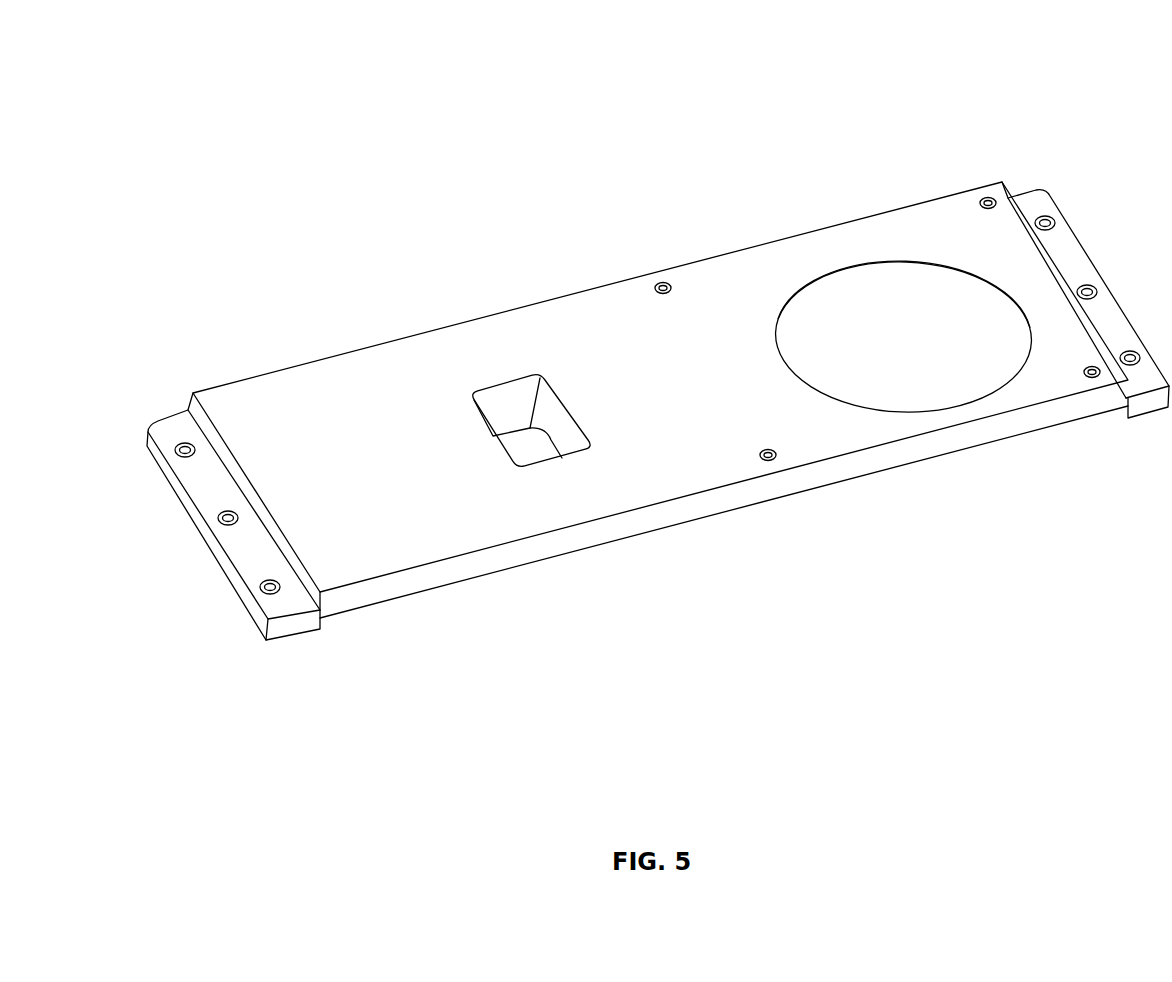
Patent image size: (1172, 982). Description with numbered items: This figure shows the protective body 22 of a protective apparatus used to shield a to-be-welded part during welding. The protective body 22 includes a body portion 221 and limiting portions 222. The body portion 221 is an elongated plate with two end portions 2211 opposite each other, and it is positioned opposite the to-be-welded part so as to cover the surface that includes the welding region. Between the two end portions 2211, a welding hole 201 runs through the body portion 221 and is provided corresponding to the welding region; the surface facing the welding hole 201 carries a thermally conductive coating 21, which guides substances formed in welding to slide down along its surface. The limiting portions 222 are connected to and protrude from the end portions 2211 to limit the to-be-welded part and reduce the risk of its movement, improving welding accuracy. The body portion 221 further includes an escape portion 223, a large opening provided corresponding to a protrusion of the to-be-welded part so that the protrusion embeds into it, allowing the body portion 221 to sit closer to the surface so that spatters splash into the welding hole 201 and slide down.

The protective body 22 is at (350, 102).
The body portion 221 is at (729, 443).
The limiting portions 222 is at (243, 535).
The end portions 2211 is at (350, 532).
The escape portion 223 is at (905, 270).
The thermally conductive coating 21 is at (569, 422).
The welding hole 201 is at (512, 373).